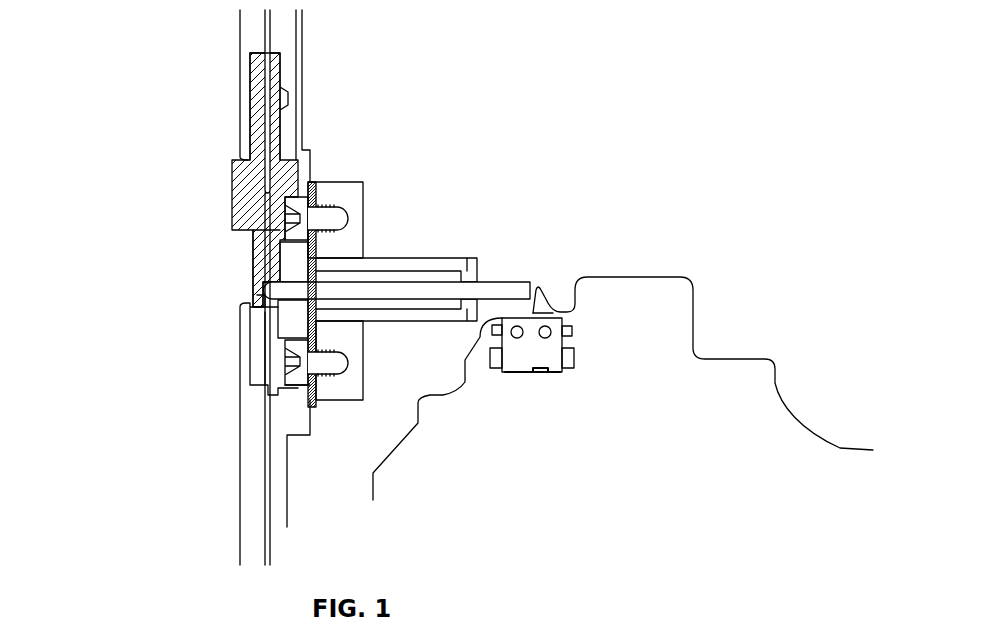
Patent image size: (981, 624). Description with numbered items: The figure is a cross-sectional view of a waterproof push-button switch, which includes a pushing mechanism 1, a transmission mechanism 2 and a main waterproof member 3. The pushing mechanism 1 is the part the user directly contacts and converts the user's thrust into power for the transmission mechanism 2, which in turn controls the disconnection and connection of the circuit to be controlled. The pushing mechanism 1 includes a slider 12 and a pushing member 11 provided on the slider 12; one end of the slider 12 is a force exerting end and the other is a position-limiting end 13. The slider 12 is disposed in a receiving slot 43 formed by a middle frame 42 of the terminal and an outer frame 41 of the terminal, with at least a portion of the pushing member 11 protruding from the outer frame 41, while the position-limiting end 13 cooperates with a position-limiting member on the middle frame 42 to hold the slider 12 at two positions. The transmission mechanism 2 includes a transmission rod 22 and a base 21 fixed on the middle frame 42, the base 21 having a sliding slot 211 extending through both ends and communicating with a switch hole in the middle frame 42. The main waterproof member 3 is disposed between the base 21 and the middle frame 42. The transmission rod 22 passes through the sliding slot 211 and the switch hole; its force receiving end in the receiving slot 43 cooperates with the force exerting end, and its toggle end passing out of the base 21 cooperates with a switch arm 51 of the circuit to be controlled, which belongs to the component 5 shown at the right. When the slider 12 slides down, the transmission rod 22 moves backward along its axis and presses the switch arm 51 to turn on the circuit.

The pushing mechanism 1 is at (354, 109).
The pushing member 11 is at (154, 158).
The slider 12 is at (156, 268).
The position-limiting end 13 is at (151, 104).
The transmission mechanism 2 is at (444, 413).
The base 21 is at (434, 202).
The sliding slot 211 is at (471, 247).
The transmission rod 22 is at (503, 248).
The main waterproof member 3 is at (419, 341).
The outer frame of the terminal 41 is at (159, 434).
The middle frame of the terminal 42 is at (165, 379).
The receiving slot 43 is at (149, 340).
The sensor bracket 5 is at (545, 348).
The switch arm 51 is at (681, 265).